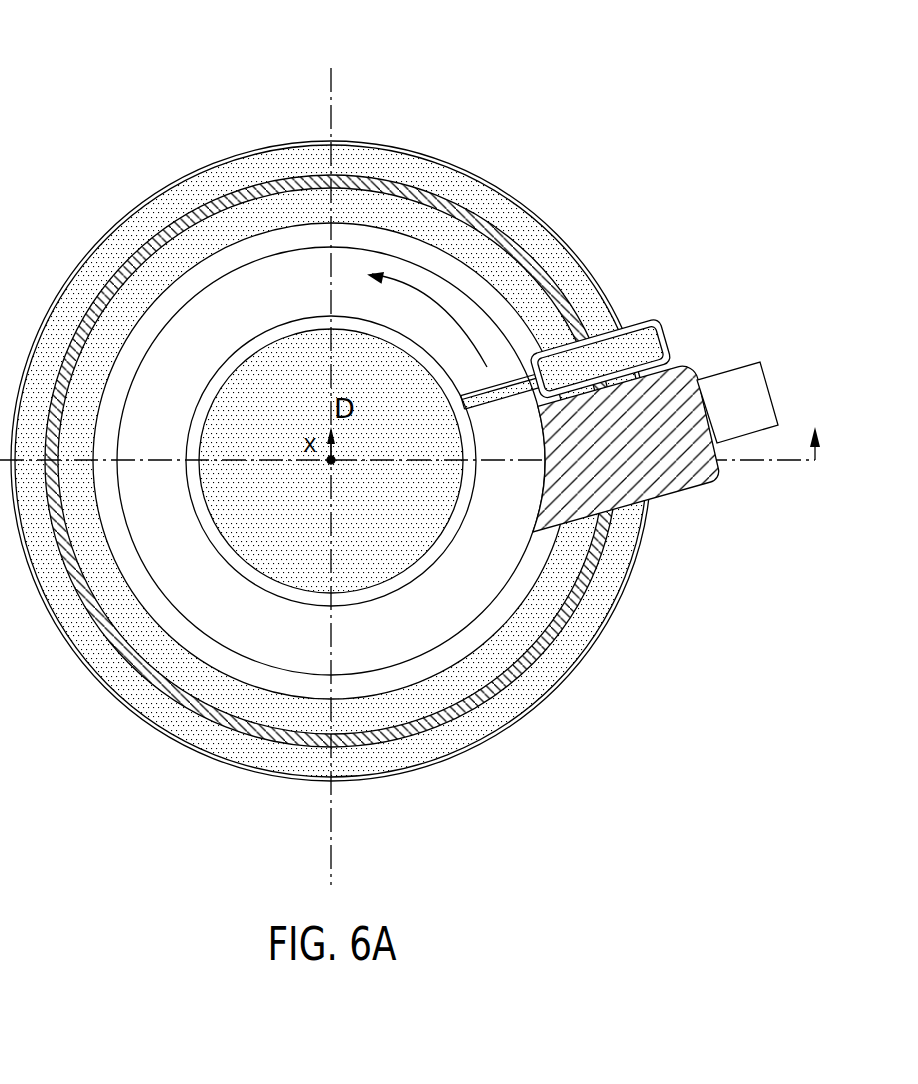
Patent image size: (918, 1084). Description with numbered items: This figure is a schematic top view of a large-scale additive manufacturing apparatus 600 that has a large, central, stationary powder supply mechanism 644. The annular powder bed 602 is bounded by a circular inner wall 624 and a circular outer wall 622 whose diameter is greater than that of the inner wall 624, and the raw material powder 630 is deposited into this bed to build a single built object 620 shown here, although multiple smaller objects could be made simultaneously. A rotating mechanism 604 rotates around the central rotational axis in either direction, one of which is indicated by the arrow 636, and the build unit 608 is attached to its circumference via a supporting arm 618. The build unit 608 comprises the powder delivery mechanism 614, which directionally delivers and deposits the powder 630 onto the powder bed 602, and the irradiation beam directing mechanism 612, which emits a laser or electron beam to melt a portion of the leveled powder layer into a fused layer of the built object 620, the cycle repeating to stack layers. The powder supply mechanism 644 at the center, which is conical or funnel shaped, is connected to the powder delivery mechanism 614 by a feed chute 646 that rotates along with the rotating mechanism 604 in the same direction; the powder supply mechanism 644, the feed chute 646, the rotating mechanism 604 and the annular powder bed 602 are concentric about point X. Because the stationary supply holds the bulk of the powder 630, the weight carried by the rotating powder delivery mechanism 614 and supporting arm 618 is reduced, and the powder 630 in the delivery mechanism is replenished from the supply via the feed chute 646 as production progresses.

The large-scale additive manufacturing apparatus 600 is at (129, 88).
The annular powder bed 602 is at (468, 114).
The rotating mechanism 604 is at (453, 608).
The build unit 608 is at (818, 305).
The irradiation beam directing mechanism 612 is at (745, 362).
The powder delivery mechanism 614 is at (665, 338).
The supporting arm 618 is at (687, 487).
The built object 620 is at (556, 231).
The circular outer wall 622 is at (527, 205).
The circular inner wall 624 is at (408, 232).
The powder 630 is at (576, 278).
The arrow 636 is at (450, 316).
The powder supply mechanism 644 is at (240, 573).
The feed chute 646 is at (498, 403).